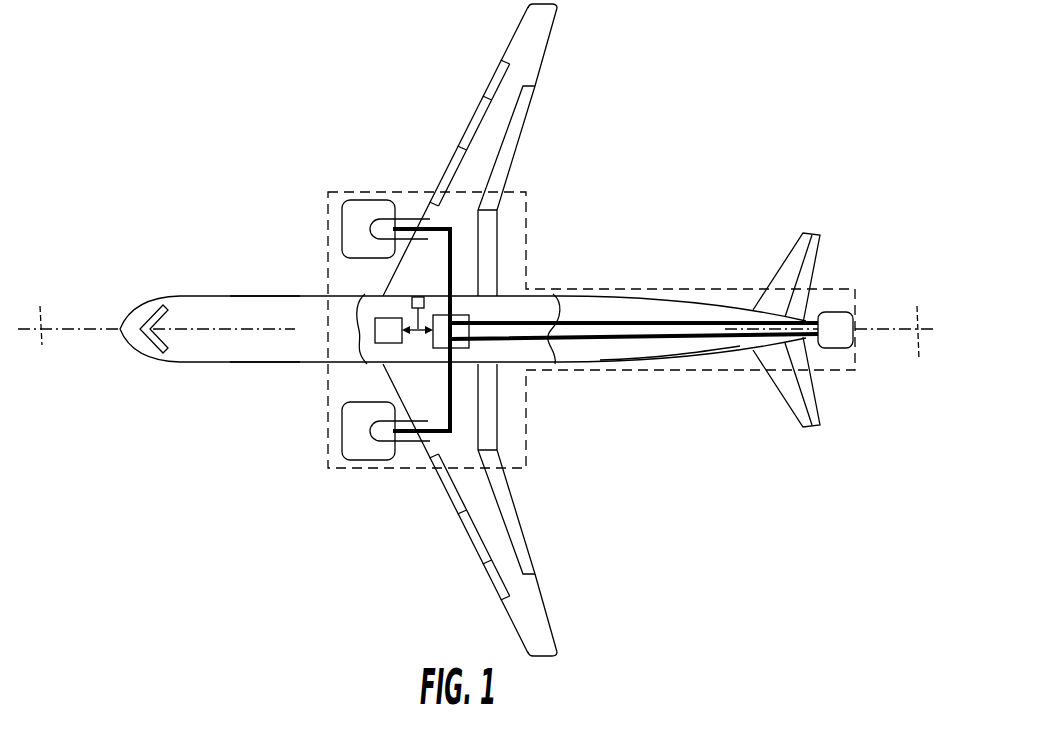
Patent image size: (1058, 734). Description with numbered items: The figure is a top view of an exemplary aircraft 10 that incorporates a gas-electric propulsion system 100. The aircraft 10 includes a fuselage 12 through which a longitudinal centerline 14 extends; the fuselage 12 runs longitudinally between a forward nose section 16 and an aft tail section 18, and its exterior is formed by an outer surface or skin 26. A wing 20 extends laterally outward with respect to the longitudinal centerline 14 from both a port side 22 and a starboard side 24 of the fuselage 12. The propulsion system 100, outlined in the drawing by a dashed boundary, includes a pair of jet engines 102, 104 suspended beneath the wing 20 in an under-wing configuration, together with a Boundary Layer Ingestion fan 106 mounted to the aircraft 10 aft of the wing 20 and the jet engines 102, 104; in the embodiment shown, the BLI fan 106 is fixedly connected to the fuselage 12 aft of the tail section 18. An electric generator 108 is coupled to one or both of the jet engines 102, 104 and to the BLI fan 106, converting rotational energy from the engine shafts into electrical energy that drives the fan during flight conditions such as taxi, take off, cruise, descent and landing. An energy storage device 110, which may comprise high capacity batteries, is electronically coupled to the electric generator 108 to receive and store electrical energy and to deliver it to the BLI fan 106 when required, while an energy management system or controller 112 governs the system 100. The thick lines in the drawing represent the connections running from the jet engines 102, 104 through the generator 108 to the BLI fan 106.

The aircraft 10 is at (675, 104).
The fuselage 12 is at (178, 347).
The longitudinal centerline 14 is at (474, 336).
The nose section 16 is at (117, 348).
The tail section 18 is at (776, 425).
The wing 20 is at (538, 34).
The port side 22 is at (262, 384).
The starboard side 24 is at (258, 283).
The outer surface or skin 26 is at (626, 348).
The gas-electric propulsion system 100 is at (578, 287).
The jet engine 102 is at (360, 470).
The jet engine 104 is at (358, 198).
The Boundary Layer Ingestion (BLI) fan 106 is at (838, 314).
The electric generator 108 is at (470, 314).
The energy storage device 110 is at (378, 345).
The energy management system or controller 112 is at (413, 299).